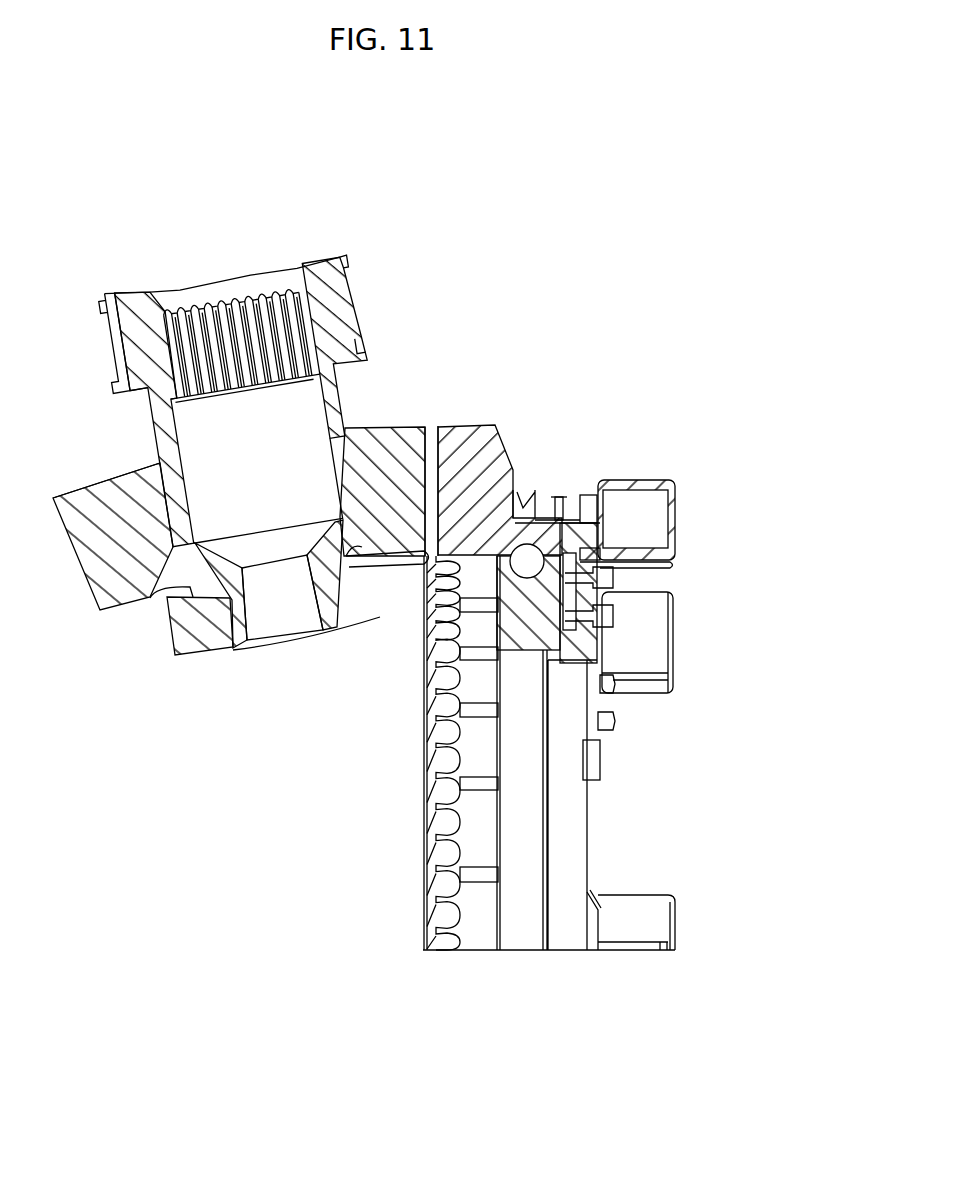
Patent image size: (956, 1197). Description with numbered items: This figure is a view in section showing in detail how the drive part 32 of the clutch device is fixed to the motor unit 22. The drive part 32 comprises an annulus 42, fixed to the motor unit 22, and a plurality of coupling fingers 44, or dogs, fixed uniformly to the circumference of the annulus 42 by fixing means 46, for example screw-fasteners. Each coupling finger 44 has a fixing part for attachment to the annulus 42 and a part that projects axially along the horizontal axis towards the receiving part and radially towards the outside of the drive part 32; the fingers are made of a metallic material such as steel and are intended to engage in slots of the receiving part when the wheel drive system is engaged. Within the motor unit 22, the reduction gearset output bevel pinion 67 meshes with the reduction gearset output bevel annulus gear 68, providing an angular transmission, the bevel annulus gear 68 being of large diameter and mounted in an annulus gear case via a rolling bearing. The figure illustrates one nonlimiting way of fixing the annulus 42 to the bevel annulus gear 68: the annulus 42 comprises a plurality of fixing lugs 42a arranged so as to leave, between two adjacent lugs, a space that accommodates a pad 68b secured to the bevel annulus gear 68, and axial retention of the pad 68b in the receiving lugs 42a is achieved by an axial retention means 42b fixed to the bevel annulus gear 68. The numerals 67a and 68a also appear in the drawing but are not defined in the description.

The motor unit 22 is at (605, 589).
The drive part 32 is at (633, 717).
The annulus 42 is at (575, 840).
The fixing lugs 42a is at (589, 482).
The axial retention means 42b is at (573, 482).
The coupling fingers 44 is at (673, 523).
The fixing means 46 is at (605, 577).
The reduction gearset output bevel pinion 67 is at (132, 540).
The clamp tab 67a is at (105, 530).
The reduction gearset output bevel annulus gear 68 is at (460, 431).
The slot 68a is at (428, 485).
The pad 68b is at (598, 536).